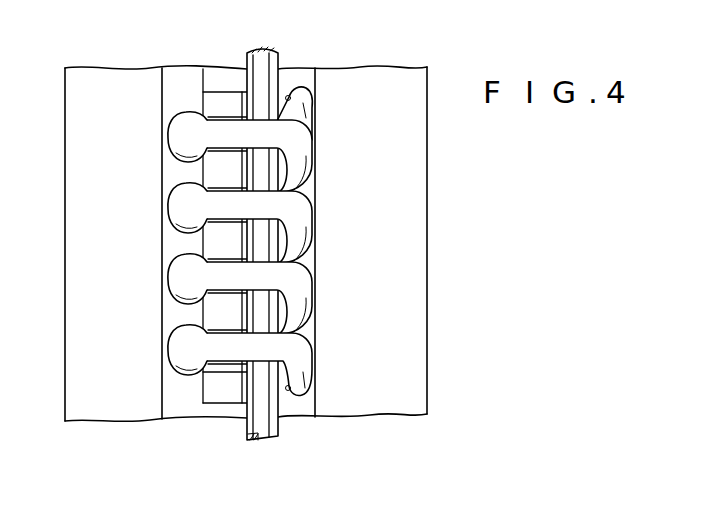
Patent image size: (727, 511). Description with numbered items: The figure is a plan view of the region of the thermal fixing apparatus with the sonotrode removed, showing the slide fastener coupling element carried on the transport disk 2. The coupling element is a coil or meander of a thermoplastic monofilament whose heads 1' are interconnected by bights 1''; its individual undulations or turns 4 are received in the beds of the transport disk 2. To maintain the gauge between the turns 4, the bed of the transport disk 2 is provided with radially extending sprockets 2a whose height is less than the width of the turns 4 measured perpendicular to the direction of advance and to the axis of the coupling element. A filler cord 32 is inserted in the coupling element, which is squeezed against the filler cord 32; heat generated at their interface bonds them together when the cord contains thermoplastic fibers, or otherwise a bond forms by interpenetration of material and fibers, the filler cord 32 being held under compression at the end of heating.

The transport disk 2 is at (437, 195).
The sprockets 2a is at (217, 393).
The filler cord 32 is at (267, 430).
The heads 1' is at (217, 329).
The bights 1'' is at (289, 175).
The turns 4 is at (227, 142).